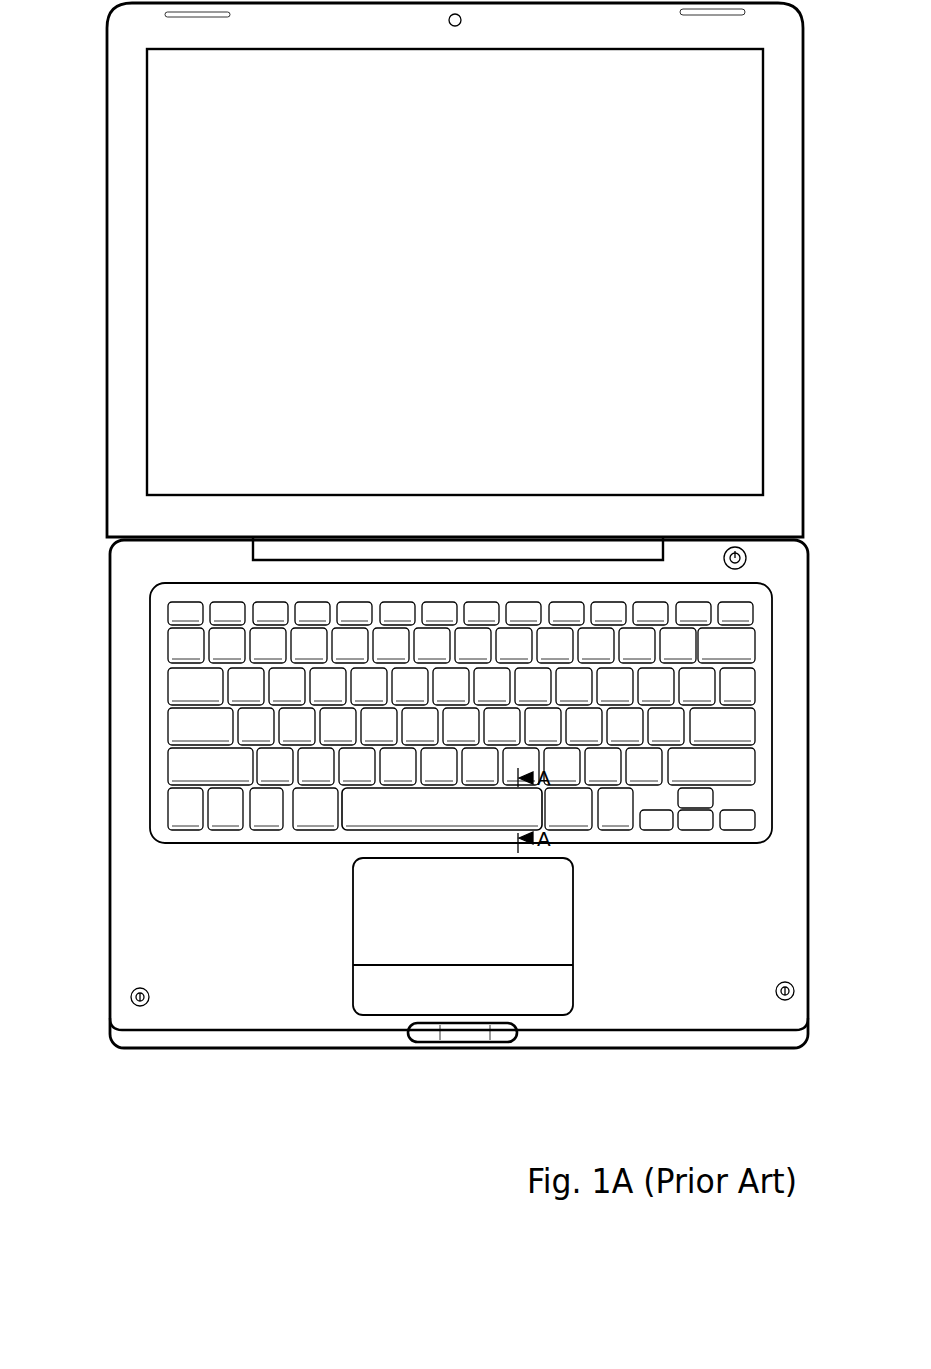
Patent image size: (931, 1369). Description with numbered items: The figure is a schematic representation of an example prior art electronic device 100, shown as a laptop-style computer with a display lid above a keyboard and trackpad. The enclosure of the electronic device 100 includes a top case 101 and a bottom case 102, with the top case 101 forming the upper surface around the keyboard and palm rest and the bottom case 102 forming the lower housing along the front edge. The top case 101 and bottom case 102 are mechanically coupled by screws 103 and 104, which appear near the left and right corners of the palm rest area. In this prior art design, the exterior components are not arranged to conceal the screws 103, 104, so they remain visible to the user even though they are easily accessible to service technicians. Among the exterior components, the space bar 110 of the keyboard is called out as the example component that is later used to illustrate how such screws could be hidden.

The electronic device 100 is at (681, 1058).
The top case 101 is at (277, 992).
The bottom case 102 is at (298, 1040).
The screw 103 is at (131, 998).
The screw 104 is at (794, 987).
The space bar 110 is at (378, 813).